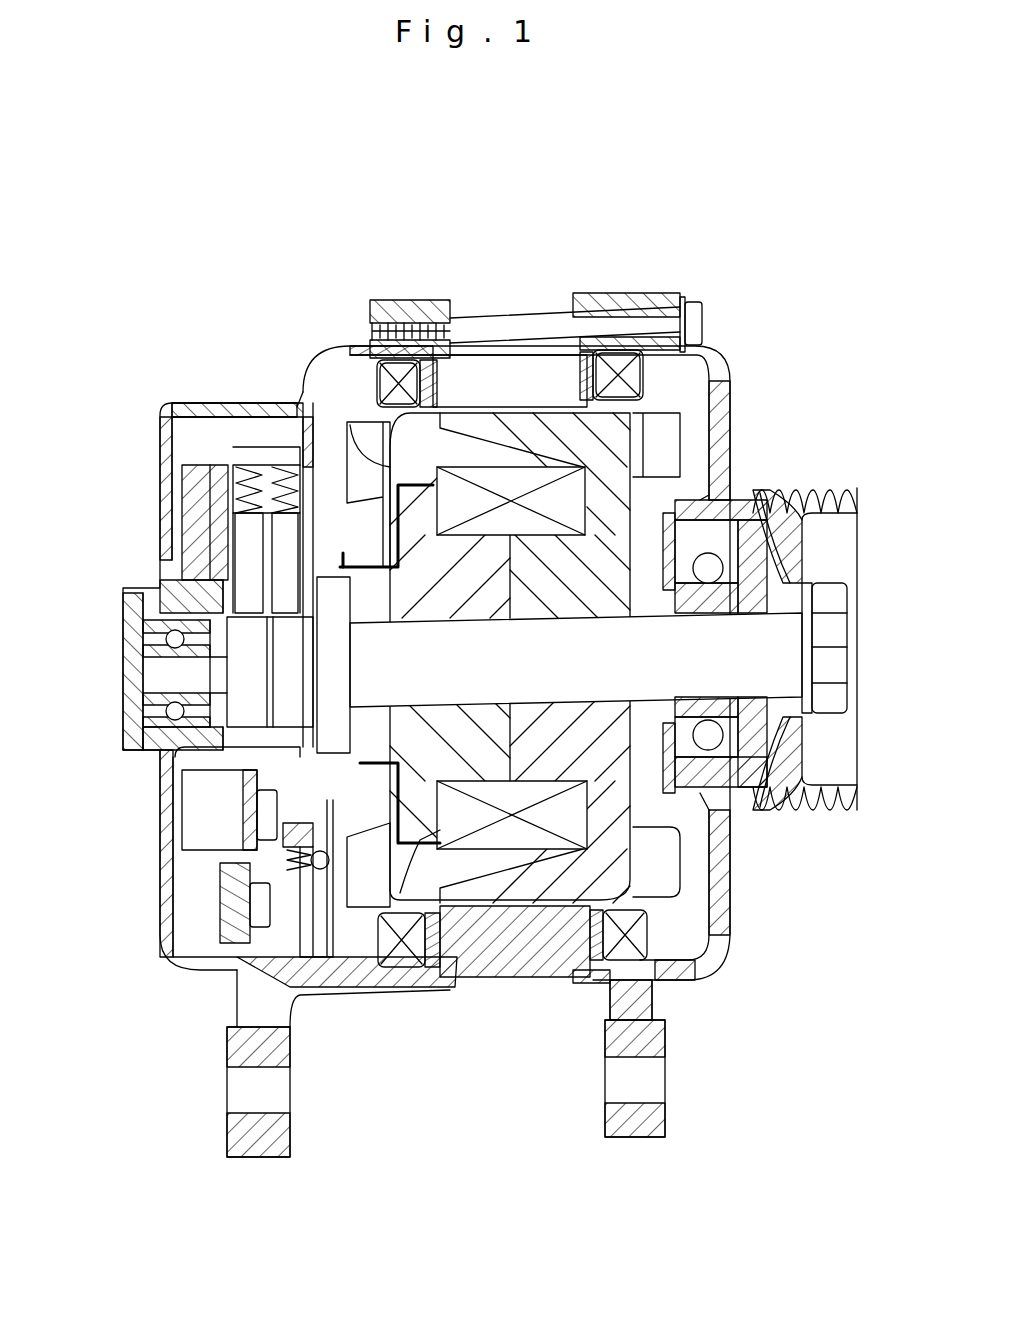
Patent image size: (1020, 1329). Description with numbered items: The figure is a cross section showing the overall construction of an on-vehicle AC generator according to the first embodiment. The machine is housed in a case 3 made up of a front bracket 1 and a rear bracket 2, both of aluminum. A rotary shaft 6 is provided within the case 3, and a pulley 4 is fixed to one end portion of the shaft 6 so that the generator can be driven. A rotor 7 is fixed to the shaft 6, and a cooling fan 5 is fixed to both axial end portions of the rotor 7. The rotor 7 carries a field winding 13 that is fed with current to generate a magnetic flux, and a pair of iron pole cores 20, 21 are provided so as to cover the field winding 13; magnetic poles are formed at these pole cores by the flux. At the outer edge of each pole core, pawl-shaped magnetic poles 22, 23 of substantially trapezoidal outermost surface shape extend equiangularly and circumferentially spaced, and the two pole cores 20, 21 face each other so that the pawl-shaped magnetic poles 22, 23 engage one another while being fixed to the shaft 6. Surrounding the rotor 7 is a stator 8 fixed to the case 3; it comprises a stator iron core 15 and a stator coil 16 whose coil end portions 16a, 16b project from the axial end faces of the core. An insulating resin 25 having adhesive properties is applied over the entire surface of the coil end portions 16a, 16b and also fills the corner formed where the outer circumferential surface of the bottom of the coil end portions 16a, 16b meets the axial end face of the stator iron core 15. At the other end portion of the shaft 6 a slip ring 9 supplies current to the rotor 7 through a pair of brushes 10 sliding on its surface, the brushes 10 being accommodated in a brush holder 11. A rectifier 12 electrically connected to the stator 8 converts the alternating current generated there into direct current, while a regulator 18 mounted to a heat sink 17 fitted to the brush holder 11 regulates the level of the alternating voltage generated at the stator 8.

The front bracket 1 is at (733, 893).
The rear bracket 2 is at (156, 923).
The case 3 is at (735, 965).
The pulley 4 is at (805, 793).
The cooling fan 5 is at (665, 462).
The shaft 6 is at (773, 663).
The rotor 7 is at (576, 789).
The stator 8 is at (577, 564).
The slip ring 9 is at (246, 637).
The brushes 10 is at (246, 533).
The brush holder 11 is at (240, 445).
The rectifier 12 is at (218, 800).
The field winding 13 is at (503, 833).
The stator iron core 15 is at (511, 375).
The stator coil 16 is at (593, 375).
The coil end portion 16a is at (637, 377).
The coil end portion 16b is at (408, 453).
The heat sink 17 is at (195, 484).
The regulator 18 is at (187, 408).
The pole core 20 is at (580, 857).
The pole core 21 is at (450, 900).
The pawl-shaped magnetic pole 22 is at (643, 433).
The pawl-shaped magnetic pole 23 is at (352, 440).
The insulating resin 25 is at (447, 382).